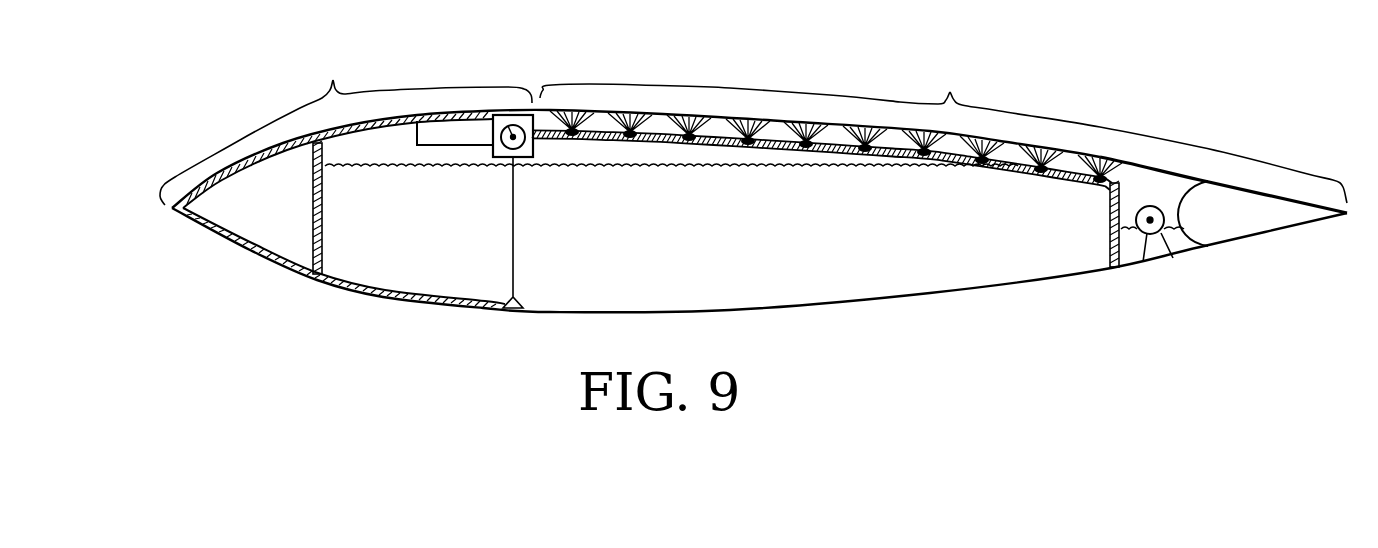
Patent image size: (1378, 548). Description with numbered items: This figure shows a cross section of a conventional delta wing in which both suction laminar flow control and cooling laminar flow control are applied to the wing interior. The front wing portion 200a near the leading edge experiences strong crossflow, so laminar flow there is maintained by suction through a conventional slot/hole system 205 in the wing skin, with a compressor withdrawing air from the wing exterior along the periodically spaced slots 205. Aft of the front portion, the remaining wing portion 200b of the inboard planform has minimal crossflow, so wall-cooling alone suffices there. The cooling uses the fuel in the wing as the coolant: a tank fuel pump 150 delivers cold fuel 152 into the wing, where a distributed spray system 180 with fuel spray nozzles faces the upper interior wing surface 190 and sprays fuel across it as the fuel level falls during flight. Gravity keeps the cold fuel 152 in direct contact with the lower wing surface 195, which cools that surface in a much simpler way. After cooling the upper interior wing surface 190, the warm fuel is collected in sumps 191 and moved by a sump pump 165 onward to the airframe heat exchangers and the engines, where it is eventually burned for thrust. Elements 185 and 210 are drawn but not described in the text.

The tank fuel pump 150 is at (514, 132).
The cold fuel 152 is at (450, 255).
The sump pump 165 is at (1165, 245).
The distributed spray system 180 is at (875, 168).
The spray nozzles 185 is at (1067, 178).
The upper interior wing surface 190 is at (1082, 157).
The sumps 191 is at (1133, 248).
The lower wing surface 195 is at (965, 287).
The front wing portion 200a is at (346, 125).
The remaining wing portion 200b is at (943, 129).
The slot/hole system 205 is at (247, 158).
The housing 210 is at (462, 128).